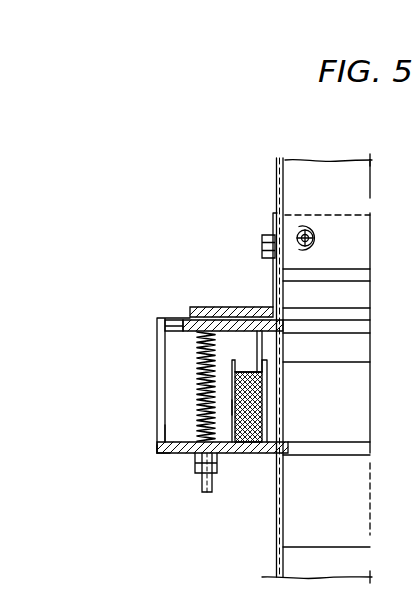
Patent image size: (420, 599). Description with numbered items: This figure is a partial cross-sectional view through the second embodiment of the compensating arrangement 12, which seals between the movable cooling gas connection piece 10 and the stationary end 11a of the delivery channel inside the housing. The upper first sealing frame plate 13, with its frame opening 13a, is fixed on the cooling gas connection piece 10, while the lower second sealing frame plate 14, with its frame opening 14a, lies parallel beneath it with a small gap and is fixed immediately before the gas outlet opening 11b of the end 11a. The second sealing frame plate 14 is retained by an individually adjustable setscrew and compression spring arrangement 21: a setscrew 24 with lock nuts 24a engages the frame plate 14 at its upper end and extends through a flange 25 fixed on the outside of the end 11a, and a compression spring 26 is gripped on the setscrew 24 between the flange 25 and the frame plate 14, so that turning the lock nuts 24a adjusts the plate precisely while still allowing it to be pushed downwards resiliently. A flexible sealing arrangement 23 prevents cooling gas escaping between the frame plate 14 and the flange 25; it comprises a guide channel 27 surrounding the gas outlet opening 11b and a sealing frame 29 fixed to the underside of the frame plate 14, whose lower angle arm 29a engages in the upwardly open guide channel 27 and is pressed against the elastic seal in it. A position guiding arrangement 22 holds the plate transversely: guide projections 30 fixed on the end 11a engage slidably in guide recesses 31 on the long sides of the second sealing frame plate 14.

The cooling gas connection piece 10 is at (298, 182).
The end of the delivery channel 11a is at (291, 532).
The gas outlet opening 11b is at (326, 432).
The compensating arrangement 12 is at (201, 265).
The first sealing frame plate 13 is at (240, 306).
The frame opening 13a is at (276, 310).
The second sealing frame plate 14 is at (183, 322).
The frame opening 14a is at (298, 326).
The setscrew and compression spring arrangement 21 is at (194, 423).
The position guiding arrangement 22 is at (156, 417).
The flexible sealing arrangement 23 is at (232, 407).
The setscrew 24 is at (200, 484).
The lock nuts 24a is at (217, 468).
The flange 25 is at (167, 453).
The compression spring 26 is at (197, 356).
The guide channel 27 is at (278, 425).
The sealing frame 29 is at (234, 352).
The lower angle arm 29a is at (263, 405).
The guide projections 30 is at (170, 428).
The guide recesses 31 is at (165, 340).